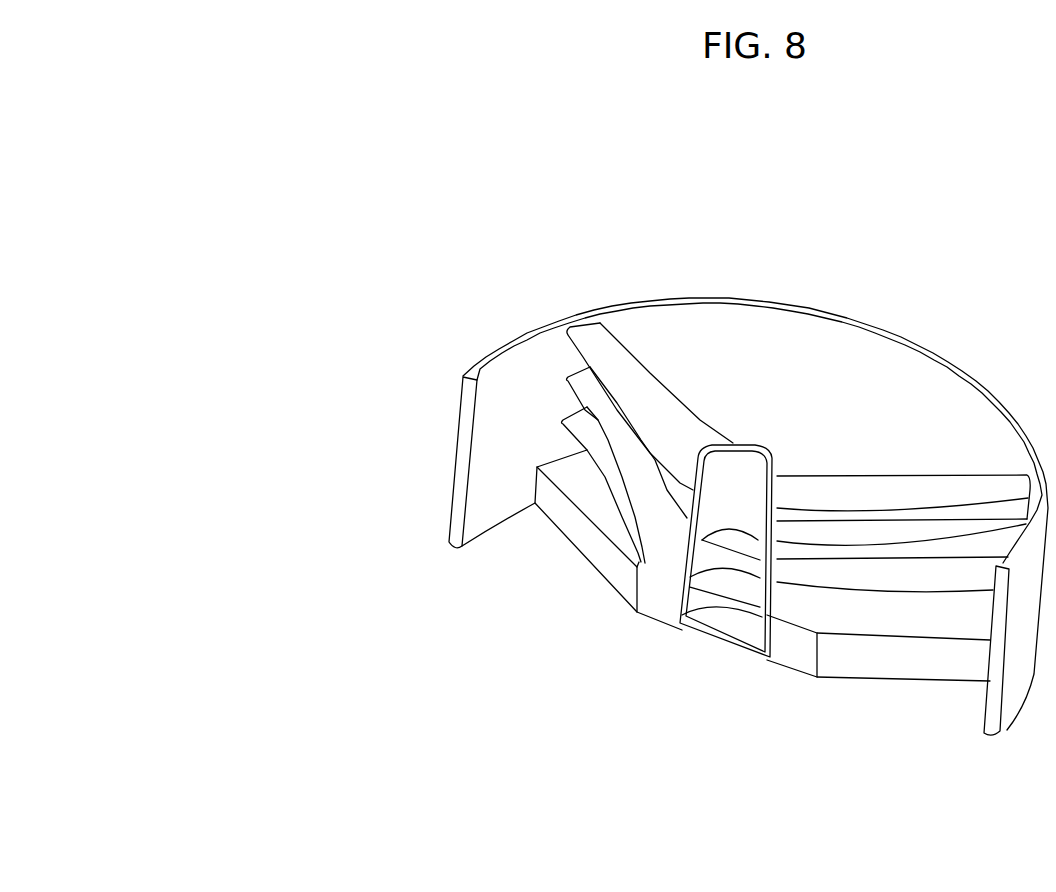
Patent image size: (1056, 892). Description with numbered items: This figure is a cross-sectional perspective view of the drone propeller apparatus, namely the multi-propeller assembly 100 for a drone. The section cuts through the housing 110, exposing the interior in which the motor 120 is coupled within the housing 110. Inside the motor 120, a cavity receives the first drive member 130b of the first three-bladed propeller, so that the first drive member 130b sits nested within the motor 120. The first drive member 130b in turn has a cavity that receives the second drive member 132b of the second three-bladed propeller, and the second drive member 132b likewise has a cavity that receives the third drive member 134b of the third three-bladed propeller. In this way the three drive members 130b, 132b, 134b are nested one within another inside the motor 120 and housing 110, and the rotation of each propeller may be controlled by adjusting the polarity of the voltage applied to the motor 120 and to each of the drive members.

The multi-propeller assembly 100 is at (207, 157).
The housing 110 is at (466, 438).
The motor 120 is at (863, 663).
The first drive member 130b is at (735, 645).
The second drive member 132b is at (683, 612).
The third drive member 134b is at (700, 562).